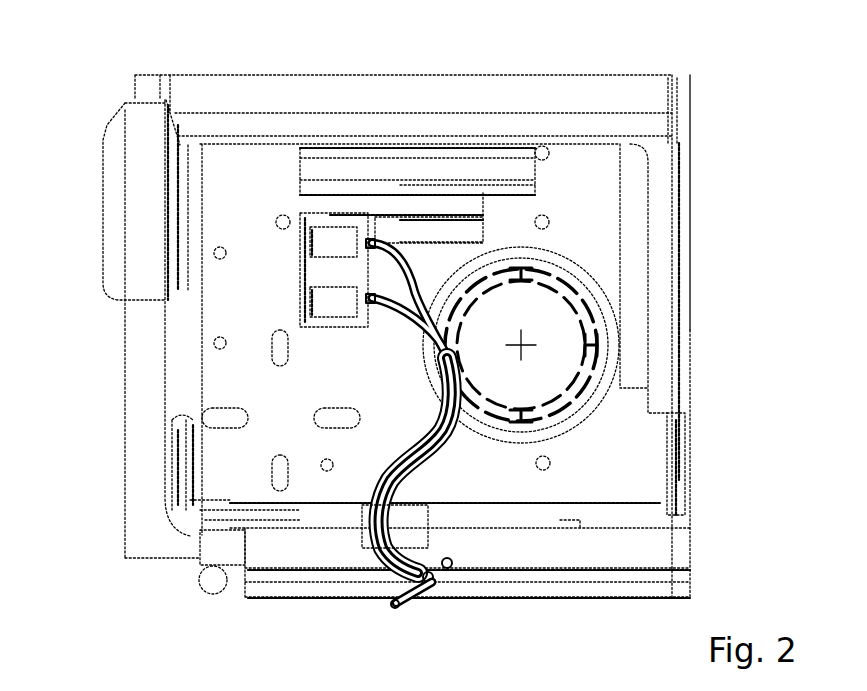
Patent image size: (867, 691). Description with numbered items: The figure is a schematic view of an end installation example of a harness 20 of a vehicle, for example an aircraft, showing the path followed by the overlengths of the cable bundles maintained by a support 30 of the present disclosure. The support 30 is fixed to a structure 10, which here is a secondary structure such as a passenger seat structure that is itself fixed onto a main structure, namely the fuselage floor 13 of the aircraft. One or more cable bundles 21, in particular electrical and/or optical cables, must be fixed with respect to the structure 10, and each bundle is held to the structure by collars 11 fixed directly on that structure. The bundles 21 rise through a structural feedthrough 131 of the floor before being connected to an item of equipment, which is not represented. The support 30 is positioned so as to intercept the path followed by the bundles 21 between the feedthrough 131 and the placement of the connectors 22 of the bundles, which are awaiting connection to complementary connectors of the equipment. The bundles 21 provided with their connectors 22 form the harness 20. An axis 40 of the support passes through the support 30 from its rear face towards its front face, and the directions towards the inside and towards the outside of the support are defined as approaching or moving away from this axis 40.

The structure 10 is at (672, 72).
The collar 11 is at (410, 490).
The fuselage floor 13 is at (655, 543).
The feedthrough 131 is at (376, 548).
The harness 20 is at (418, 462).
The cable bundle 21 is at (417, 316).
The connector 22 is at (346, 290).
The support 30 is at (588, 272).
The axis 40 is at (521, 345).